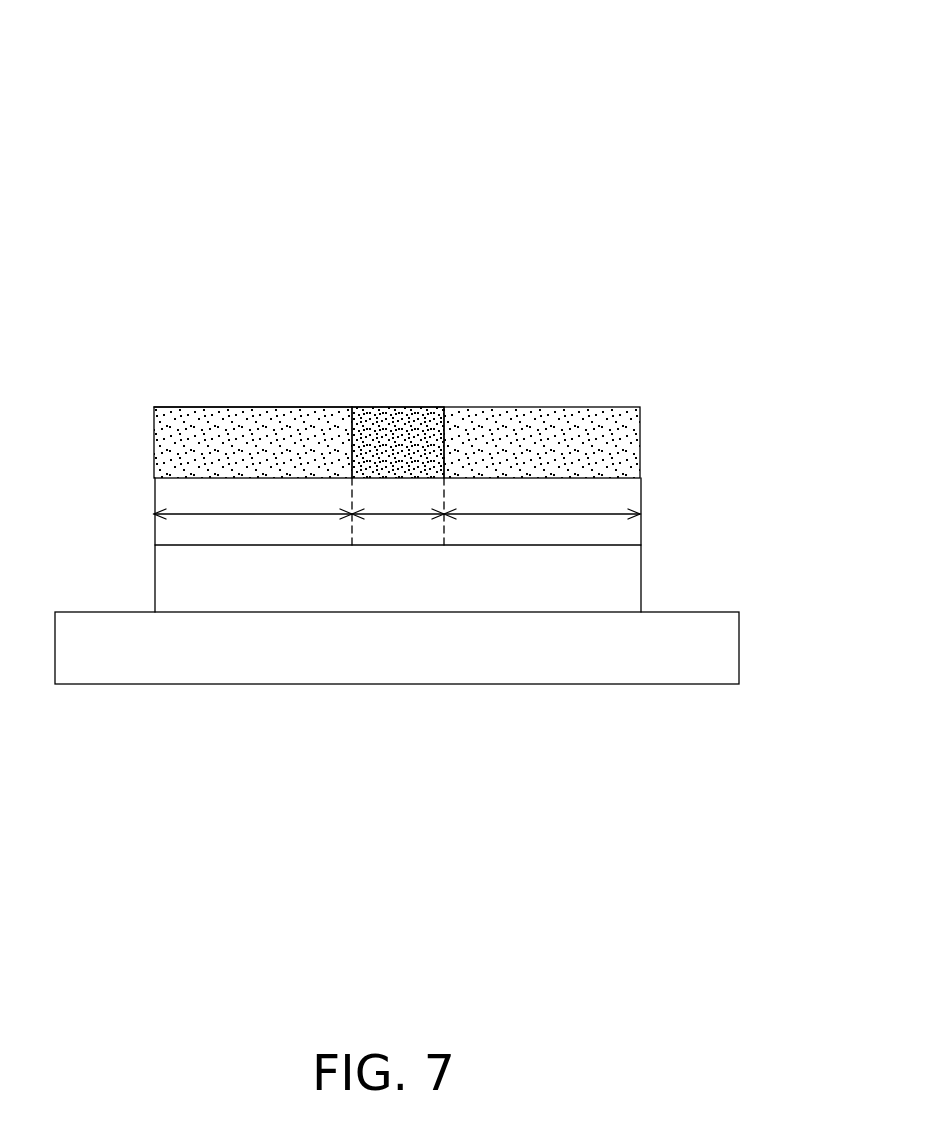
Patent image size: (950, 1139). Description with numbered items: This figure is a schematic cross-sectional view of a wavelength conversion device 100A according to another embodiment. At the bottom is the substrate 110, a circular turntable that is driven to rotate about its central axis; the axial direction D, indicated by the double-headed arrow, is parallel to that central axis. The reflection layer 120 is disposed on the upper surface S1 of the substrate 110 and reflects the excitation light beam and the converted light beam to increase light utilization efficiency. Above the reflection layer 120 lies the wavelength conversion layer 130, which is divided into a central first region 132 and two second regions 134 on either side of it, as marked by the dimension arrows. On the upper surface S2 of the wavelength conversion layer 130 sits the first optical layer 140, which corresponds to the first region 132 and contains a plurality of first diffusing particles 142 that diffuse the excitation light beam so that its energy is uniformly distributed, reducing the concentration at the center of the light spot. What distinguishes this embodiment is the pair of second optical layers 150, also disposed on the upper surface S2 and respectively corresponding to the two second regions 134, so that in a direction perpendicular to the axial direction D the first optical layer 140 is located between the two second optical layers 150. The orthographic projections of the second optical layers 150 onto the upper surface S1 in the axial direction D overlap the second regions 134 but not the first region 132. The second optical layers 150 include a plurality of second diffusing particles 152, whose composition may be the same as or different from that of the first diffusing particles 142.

The substrate 110 is at (722, 650).
The reflection layer 120 is at (620, 565).
The wavelength conversion layer 130 is at (630, 528).
The first region 132 is at (383, 514).
The second regions 134 is at (200, 513).
The first optical layer 140 is at (422, 427).
The first diffusing particles 142 is at (382, 417).
The second optical layers 150 is at (177, 442).
The second diffusing particles 152 is at (213, 418).
The wavelength conversion device 100A is at (755, 968).
The upper surface of the substrate S1 is at (85, 612).
The upper surface of the wavelength conversion layer S2 is at (278, 476).
The axial direction D is at (18, 18).